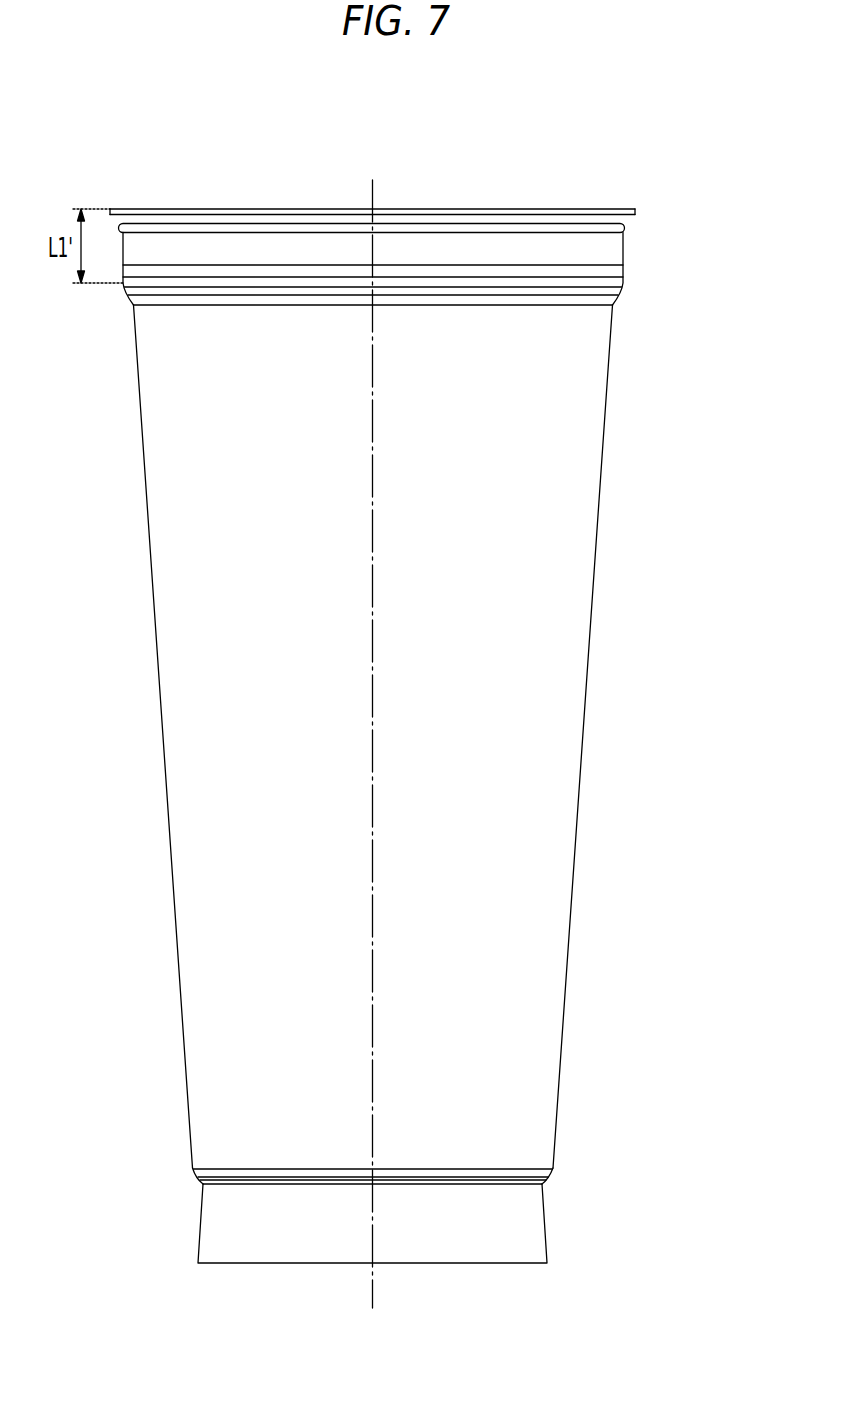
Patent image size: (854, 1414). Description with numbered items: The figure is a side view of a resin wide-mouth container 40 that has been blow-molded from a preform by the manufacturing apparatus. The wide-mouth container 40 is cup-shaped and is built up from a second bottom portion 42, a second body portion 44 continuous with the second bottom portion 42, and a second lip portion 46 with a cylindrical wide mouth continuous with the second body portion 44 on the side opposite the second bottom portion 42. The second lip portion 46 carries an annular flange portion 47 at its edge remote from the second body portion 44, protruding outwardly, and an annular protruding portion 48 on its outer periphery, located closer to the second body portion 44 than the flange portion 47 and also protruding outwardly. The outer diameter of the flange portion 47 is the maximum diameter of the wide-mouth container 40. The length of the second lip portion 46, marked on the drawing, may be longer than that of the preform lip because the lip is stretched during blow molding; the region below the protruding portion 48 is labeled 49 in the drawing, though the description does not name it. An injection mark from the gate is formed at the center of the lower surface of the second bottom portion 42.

The wide-mouth container 40 is at (503, 160).
The second bottom portion 42 is at (523, 1223).
The second body portion 44 is at (587, 578).
The second lip portion 46 is at (626, 209).
The flange portion 47 is at (640, 214).
The protruding portion 48 is at (627, 229).
The ribbed neck portion 49 is at (624, 248).